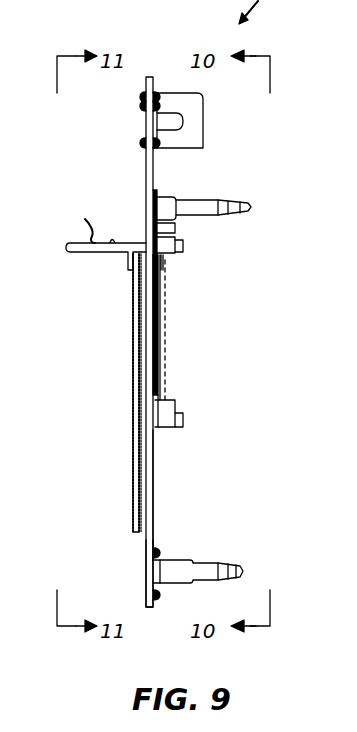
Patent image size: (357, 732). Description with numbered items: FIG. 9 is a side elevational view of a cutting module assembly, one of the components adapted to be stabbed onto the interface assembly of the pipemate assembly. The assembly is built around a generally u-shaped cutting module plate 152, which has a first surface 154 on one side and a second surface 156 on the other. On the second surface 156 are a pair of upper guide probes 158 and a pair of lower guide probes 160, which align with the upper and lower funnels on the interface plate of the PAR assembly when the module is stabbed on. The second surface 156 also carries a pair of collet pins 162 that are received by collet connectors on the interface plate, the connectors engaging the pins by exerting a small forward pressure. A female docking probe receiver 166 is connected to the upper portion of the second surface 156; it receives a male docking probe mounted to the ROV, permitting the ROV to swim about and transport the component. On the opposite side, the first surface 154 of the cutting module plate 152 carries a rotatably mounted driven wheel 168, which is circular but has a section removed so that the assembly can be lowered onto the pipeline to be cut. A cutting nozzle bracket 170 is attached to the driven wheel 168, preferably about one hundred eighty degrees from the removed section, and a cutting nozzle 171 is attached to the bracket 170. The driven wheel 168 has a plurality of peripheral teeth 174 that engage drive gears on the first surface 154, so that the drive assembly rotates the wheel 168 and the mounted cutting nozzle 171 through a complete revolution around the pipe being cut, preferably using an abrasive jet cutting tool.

The cutting module plate 152 is at (155, 468).
The first surface 154 is at (145, 580).
The second surface 156 is at (155, 507).
The upper guide probes 158 is at (247, 206).
The lower guide probes 160 is at (242, 572).
The collet pins 162 is at (183, 416).
The female docking probe receiver 166 is at (203, 127).
The driven wheel 168 is at (132, 380).
The cutting nozzle bracket 170 is at (65, 245).
The cutting nozzle 171 is at (86, 219).
The peripheral teeth 174 is at (132, 327).